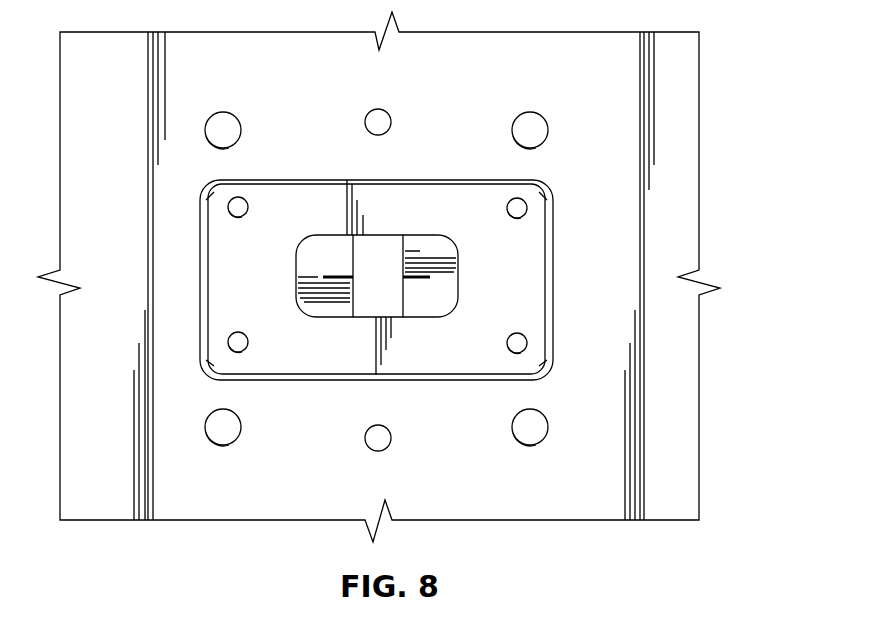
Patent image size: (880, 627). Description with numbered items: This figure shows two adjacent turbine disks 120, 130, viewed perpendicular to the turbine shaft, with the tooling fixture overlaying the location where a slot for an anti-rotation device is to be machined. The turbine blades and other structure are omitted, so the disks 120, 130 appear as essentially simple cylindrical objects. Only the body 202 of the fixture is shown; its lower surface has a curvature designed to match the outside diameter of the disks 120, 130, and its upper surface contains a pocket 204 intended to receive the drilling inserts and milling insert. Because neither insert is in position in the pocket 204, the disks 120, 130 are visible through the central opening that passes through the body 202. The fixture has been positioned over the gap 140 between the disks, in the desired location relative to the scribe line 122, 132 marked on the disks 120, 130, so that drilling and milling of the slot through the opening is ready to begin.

The body 202 is at (670, 97).
The pocket 204 is at (493, 283).
The turbine disk 120 is at (328, 244).
The scribe line 122 is at (327, 279).
The turbine disk 130 is at (427, 244).
The scribe line 132 is at (410, 280).
The gap 140 is at (378, 303).